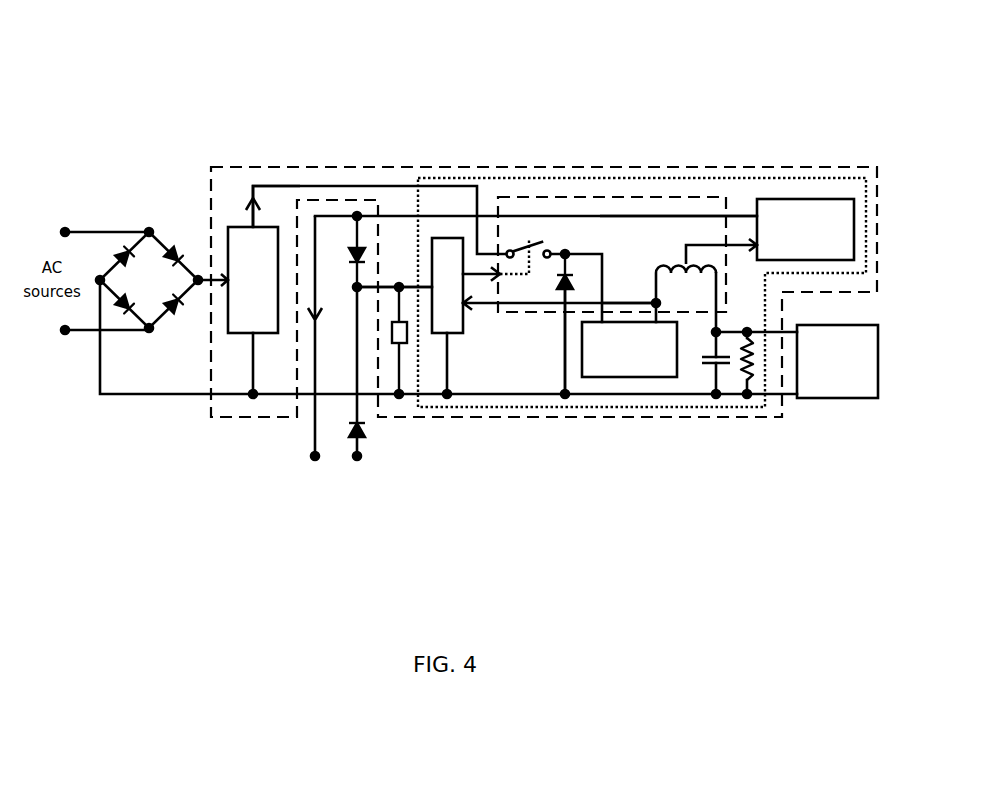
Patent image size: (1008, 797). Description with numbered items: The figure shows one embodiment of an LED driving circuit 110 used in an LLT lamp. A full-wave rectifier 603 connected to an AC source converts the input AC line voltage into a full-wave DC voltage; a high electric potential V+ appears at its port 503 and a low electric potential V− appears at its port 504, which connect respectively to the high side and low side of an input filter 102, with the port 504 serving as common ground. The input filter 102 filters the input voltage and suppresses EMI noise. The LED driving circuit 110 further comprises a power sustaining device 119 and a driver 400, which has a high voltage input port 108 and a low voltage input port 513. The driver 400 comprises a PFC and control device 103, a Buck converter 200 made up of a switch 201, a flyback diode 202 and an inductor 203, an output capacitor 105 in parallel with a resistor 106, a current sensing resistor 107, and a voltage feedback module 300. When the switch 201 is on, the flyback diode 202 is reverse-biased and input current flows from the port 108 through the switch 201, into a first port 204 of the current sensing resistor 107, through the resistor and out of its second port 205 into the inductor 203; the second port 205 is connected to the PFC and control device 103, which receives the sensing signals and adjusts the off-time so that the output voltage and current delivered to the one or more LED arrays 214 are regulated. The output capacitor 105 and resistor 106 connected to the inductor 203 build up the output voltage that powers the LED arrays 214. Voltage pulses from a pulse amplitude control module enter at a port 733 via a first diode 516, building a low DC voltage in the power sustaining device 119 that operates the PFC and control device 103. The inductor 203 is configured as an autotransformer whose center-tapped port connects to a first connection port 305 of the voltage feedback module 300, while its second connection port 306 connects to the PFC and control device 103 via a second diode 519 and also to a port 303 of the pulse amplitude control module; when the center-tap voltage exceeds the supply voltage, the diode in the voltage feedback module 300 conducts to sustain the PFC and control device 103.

The LED driving circuit 110 is at (478, 155).
The driver 400 is at (504, 167).
The Buck converter 200 is at (593, 187).
The voltage feedback module 300 is at (817, 199).
The first connection port 305 is at (744, 243).
The second connection port 306 is at (718, 214).
The inductor 203 is at (678, 260).
The second port 205 is at (654, 300).
The first port 204 is at (562, 272).
The low voltage input port 513 is at (400, 284).
The second diode 519 is at (361, 250).
The high voltage input port 108 is at (251, 184).
The input filter 102 is at (274, 226).
The full-wave rectifier 603 is at (115, 232).
The port 503 is at (199, 278).
The port 504 is at (101, 284).
The port 303 is at (314, 458).
The port 733 is at (356, 460).
The first diode 516 is at (363, 438).
The power sustaining device 119 is at (405, 344).
The PFC and control device 103 is at (463, 333).
The switch 201 is at (531, 262).
The flyback diode 202 is at (563, 300).
The current sensing resistor 107 is at (638, 378).
The output capacitor 105 is at (714, 364).
The resistor 106 is at (752, 372).
The LED arrays 214 is at (832, 399).